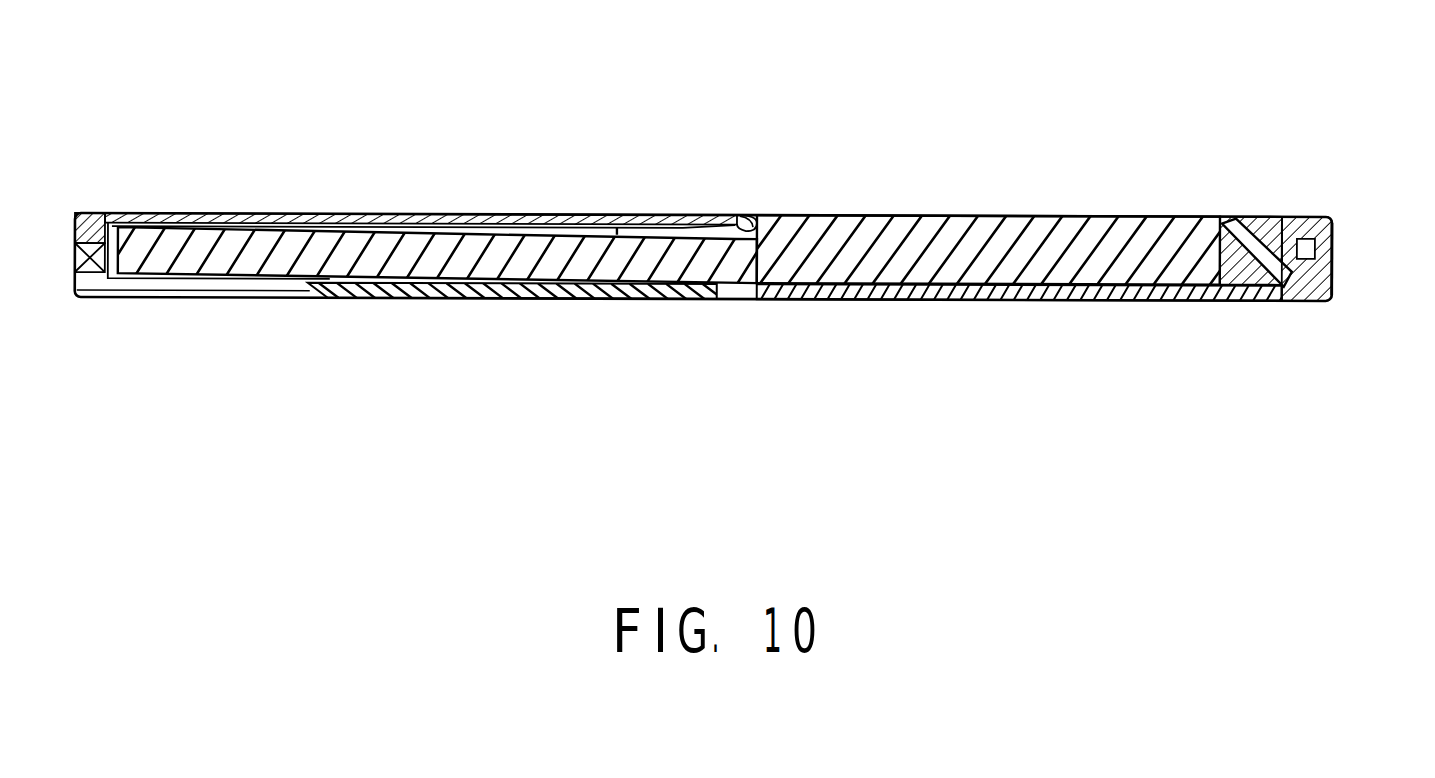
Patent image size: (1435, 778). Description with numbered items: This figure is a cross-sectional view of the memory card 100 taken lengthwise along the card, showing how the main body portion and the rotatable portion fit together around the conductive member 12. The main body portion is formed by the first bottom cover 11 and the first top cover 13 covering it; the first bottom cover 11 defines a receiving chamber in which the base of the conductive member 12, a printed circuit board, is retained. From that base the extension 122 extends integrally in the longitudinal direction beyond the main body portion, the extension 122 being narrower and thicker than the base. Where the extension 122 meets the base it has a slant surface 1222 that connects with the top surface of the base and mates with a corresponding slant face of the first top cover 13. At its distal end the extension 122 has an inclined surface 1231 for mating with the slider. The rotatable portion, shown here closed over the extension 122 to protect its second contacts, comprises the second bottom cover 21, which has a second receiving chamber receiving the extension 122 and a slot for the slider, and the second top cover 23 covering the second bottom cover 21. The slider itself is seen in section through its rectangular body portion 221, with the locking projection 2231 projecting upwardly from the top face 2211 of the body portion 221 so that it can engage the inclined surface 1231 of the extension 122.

The memory card 100 is at (704, 52).
The first bottom cover 11 is at (393, 298).
The conductive member 12 is at (535, 280).
The first top cover 13 is at (93, 214).
The extension 122 is at (968, 257).
The slant surface 1222 is at (770, 218).
The inclined surface 1231 is at (1227, 243).
The second bottom cover 21 is at (837, 287).
The body portion 221 is at (1280, 215).
The top face 2211 is at (1260, 226).
The locking projection 2231 is at (1235, 224).
The second top cover 23 is at (1333, 220).